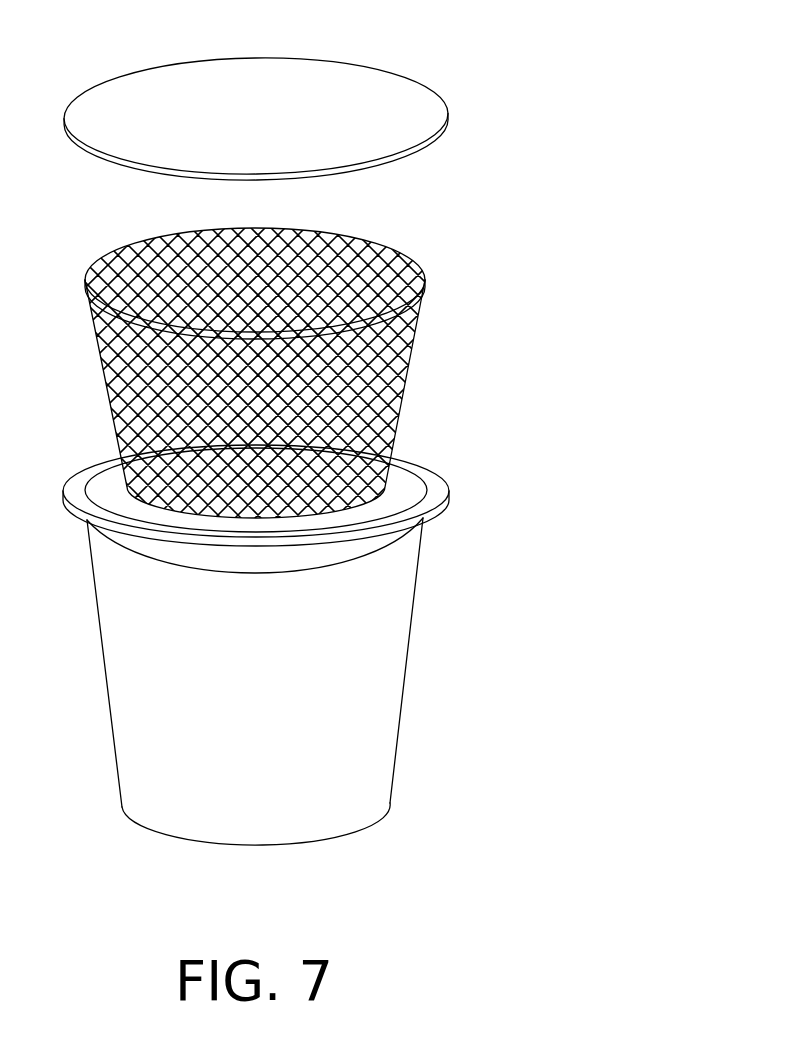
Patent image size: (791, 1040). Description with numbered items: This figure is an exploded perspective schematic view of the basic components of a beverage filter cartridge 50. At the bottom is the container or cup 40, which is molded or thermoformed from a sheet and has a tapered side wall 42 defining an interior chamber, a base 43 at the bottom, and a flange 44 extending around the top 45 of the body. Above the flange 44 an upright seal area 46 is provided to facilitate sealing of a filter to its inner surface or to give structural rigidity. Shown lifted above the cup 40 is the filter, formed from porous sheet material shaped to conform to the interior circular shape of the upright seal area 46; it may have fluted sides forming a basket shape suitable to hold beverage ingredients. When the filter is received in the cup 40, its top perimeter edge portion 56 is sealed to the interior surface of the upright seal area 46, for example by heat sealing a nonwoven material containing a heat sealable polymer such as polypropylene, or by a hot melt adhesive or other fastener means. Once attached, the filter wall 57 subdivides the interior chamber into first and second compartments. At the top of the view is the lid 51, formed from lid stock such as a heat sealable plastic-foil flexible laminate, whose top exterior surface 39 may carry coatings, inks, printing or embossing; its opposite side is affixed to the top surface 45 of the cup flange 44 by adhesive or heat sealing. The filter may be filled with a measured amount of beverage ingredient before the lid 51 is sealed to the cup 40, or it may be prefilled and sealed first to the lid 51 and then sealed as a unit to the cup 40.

The top exterior surface 39 is at (228, 121).
The cup 40 is at (272, 652).
The tapered side wall 42 is at (330, 746).
The base 43 is at (238, 848).
The flange 44 is at (80, 473).
The top 45 is at (82, 498).
The upright seal area 46 is at (397, 478).
The beverage filter cartridge 50 is at (528, 122).
The lid 51 is at (256, 102).
The filter top perimeter edge portion 56 is at (422, 324).
The filter wall 57 is at (291, 373).